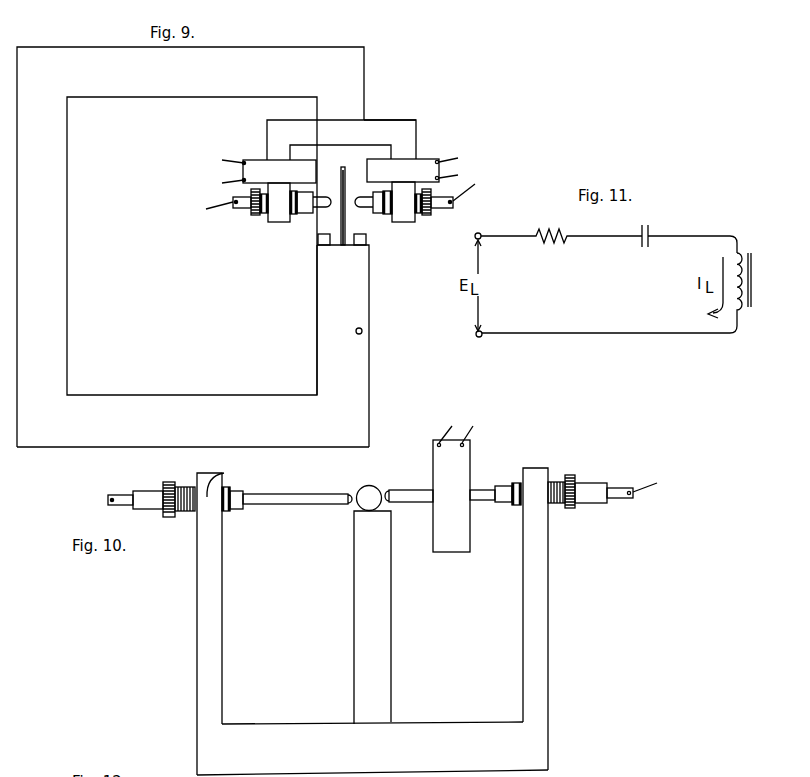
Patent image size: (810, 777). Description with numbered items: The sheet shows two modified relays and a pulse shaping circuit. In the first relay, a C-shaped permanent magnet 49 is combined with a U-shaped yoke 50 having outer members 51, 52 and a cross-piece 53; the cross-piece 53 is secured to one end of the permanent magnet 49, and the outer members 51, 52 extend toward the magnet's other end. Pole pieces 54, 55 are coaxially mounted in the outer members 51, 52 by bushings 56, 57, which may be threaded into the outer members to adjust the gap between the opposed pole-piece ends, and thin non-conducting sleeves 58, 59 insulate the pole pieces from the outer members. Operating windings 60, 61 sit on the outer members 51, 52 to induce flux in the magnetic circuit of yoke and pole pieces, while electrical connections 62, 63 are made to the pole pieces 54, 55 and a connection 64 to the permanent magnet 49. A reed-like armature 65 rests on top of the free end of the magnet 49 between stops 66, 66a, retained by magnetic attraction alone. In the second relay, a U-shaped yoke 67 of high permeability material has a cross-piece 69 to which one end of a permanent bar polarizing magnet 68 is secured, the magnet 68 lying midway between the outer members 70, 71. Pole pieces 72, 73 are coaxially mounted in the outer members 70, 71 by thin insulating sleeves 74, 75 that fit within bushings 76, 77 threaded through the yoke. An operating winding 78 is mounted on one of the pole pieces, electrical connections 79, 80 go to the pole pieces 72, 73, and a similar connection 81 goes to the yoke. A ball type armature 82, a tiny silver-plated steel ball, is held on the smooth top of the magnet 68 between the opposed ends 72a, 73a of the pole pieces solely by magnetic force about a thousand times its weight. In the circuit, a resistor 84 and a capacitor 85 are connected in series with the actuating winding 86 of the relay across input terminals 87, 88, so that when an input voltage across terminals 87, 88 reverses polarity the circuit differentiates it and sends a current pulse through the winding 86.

In FIG. 9, the C-shaped permanent magnet 49 is at (238, 52).
In FIG. 9, the U-shaped yoke 50 is at (420, 131).
In FIG. 9, the outer member 51 is at (282, 222).
In FIG. 9, the outer member 52 is at (405, 222).
In FIG. 9, the cross-piece 53 is at (389, 119).
In FIG. 9, the pole piece 54 is at (238, 210).
In FIG. 9, the pole piece 55 is at (447, 209).
In FIG. 9, the bushing 56 is at (295, 214).
In FIG. 9, the bushing 57 is at (388, 214).
In FIG. 9, the non-conducting sleeve 58 is at (255, 210).
In FIG. 9, the non-conducting sleeve 59 is at (432, 216).
In FIG. 9, the operating winding 60 is at (258, 160).
In FIG. 9, the operating winding 61 is at (423, 159).
In FIG. 9, the electrical connection 62 is at (216, 216).
In FIG. 9, the electrical connection 63 is at (472, 184).
In FIG. 9, the electrical connection 64 is at (362, 331).
In FIG. 9, the reed-like armature 65 is at (342, 168).
In FIG. 9, the stop 66 is at (318, 241).
In FIG. 9, the stop 66a is at (367, 245).
In FIG. 10, the U-shaped yoke 67 is at (573, 679).
In FIG. 10, the permanent bar polarizing magnet 68 is at (359, 620).
In FIG. 10, the cross-piece 69 is at (444, 729).
In FIG. 10, the outer member 70 is at (200, 619).
In FIG. 10, the outer member 71 is at (543, 581).
In FIG. 10, the pole piece 72 is at (297, 493).
In FIG. 10, the opposed end of pole piece 72a is at (350, 505).
In FIG. 10, the pole piece 73 is at (411, 490).
In FIG. 10, the opposed end of pole piece 73a is at (386, 503).
In FIG. 10, the insulating sleeve 74 is at (141, 491).
In FIG. 10, the insulating sleeve 75 is at (594, 485).
In FIG. 10, the bushing 76 is at (185, 487).
In FIG. 10, the bushing 77 is at (556, 481).
In FIG. 10, the operating winding 78 is at (464, 470).
In FIG. 10, the electrical connection 79 is at (110, 500).
In FIG. 10, the electrical connection 80 is at (656, 490).
In FIG. 10, the electrical connection 81 is at (226, 475).
In FIG. 10, the ball type armature 82 is at (369, 487).
In FIG. 11, the resistor 84 is at (553, 226).
In FIG. 11, the capacitor 85 is at (649, 221).
In FIG. 11, the actuating winding 86 is at (733, 255).
In FIG. 11, the input terminal 87 is at (482, 232).
In FIG. 11, the input terminal 88 is at (477, 337).